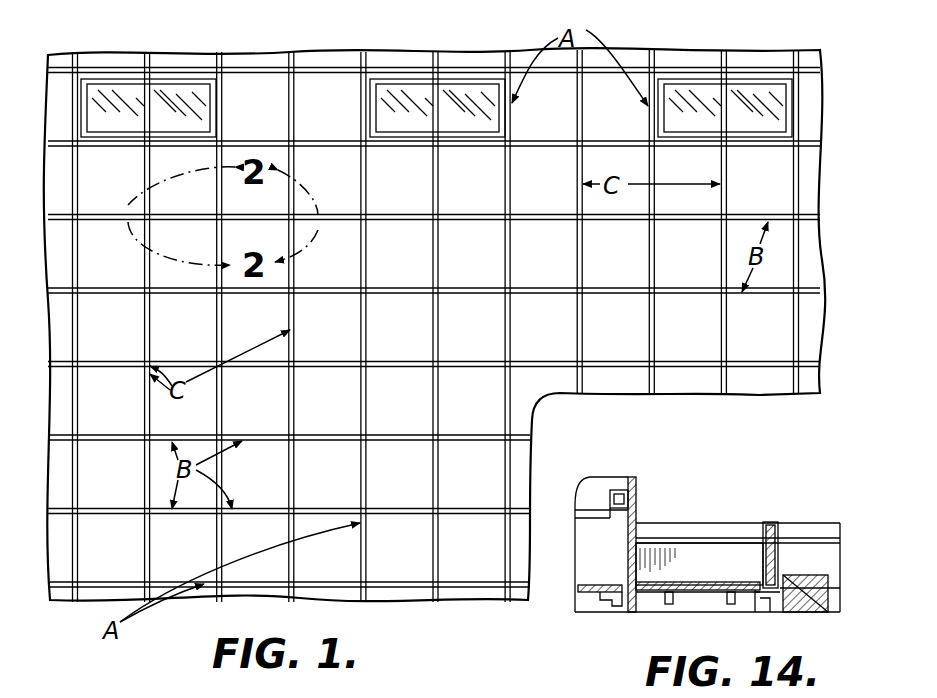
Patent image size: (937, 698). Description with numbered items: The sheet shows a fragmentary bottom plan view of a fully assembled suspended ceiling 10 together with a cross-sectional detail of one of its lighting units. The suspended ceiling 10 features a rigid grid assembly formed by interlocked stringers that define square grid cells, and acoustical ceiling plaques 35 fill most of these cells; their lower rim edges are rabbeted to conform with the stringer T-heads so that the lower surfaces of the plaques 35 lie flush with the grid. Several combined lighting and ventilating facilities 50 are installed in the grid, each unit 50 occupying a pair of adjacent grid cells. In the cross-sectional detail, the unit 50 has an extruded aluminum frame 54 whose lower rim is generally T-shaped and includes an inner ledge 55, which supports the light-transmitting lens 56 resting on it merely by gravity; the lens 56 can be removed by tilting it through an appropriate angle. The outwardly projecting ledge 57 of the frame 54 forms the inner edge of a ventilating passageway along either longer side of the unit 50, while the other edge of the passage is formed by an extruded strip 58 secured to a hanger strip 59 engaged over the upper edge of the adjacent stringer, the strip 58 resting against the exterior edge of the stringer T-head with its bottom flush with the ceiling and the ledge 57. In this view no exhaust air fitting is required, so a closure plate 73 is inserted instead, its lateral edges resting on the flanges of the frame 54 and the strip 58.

In FIG. 1, the suspended ceiling 10 is at (72, 612).
In FIG. 1, the ceiling plaques 35 is at (274, 120).
In FIG. 14, the ceiling plaques 35 is at (815, 613).
In FIG. 1, the combined lighting and ventilating facility 50 is at (121, 86).
In FIG. 1, the light-transmitting lens 56 is at (182, 96).
In FIG. 14, the light-transmitting lens 56 is at (591, 584).
In FIG. 14, the frame 54 is at (630, 550).
In FIG. 14, the inner ledge 55 is at (604, 602).
In FIG. 14, the outwardly projecting ledge 57 is at (650, 613).
In FIG. 14, the extruded strips 58 is at (758, 613).
In FIG. 14, the hanger strips 59 is at (771, 521).
In FIG. 14, the plate 73 is at (684, 582).